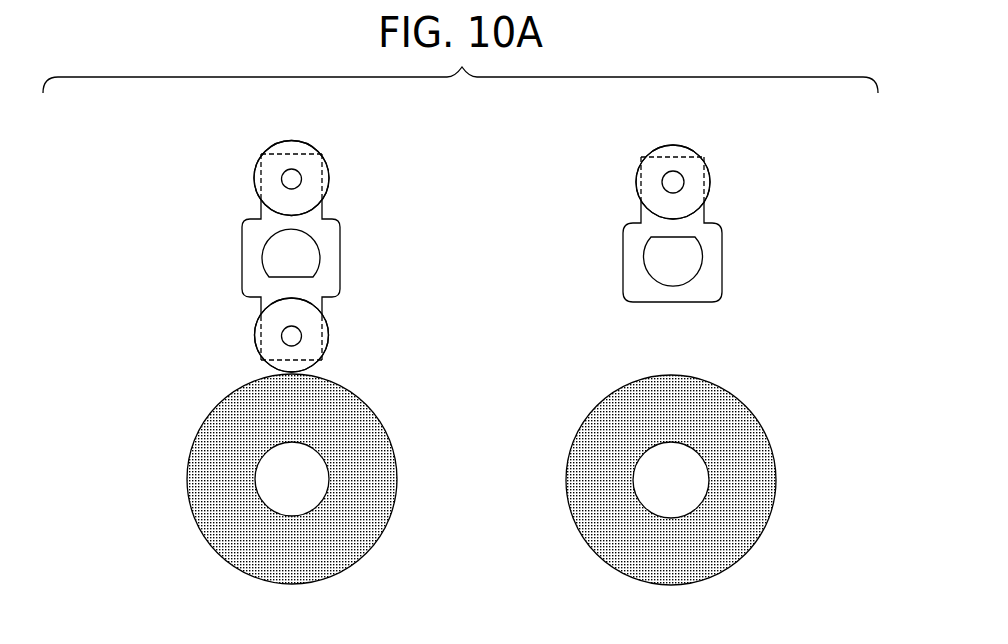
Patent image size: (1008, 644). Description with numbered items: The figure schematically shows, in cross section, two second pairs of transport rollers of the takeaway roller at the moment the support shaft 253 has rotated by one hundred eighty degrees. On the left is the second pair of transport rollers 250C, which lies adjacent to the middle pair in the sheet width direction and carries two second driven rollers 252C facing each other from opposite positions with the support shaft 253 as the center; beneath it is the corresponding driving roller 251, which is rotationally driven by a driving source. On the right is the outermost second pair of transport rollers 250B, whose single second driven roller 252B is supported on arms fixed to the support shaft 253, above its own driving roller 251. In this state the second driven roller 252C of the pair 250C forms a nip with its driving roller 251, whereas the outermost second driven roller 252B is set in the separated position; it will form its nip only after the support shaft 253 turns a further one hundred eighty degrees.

The second pair of transport rollers 250C is at (360, 192).
The second pair of transport rollers 250B is at (743, 200).
The second driven roller 252C is at (276, 168).
The second driven roller 252B is at (653, 182).
The support shaft 253 is at (288, 257).
The driving roller 251 is at (215, 512).